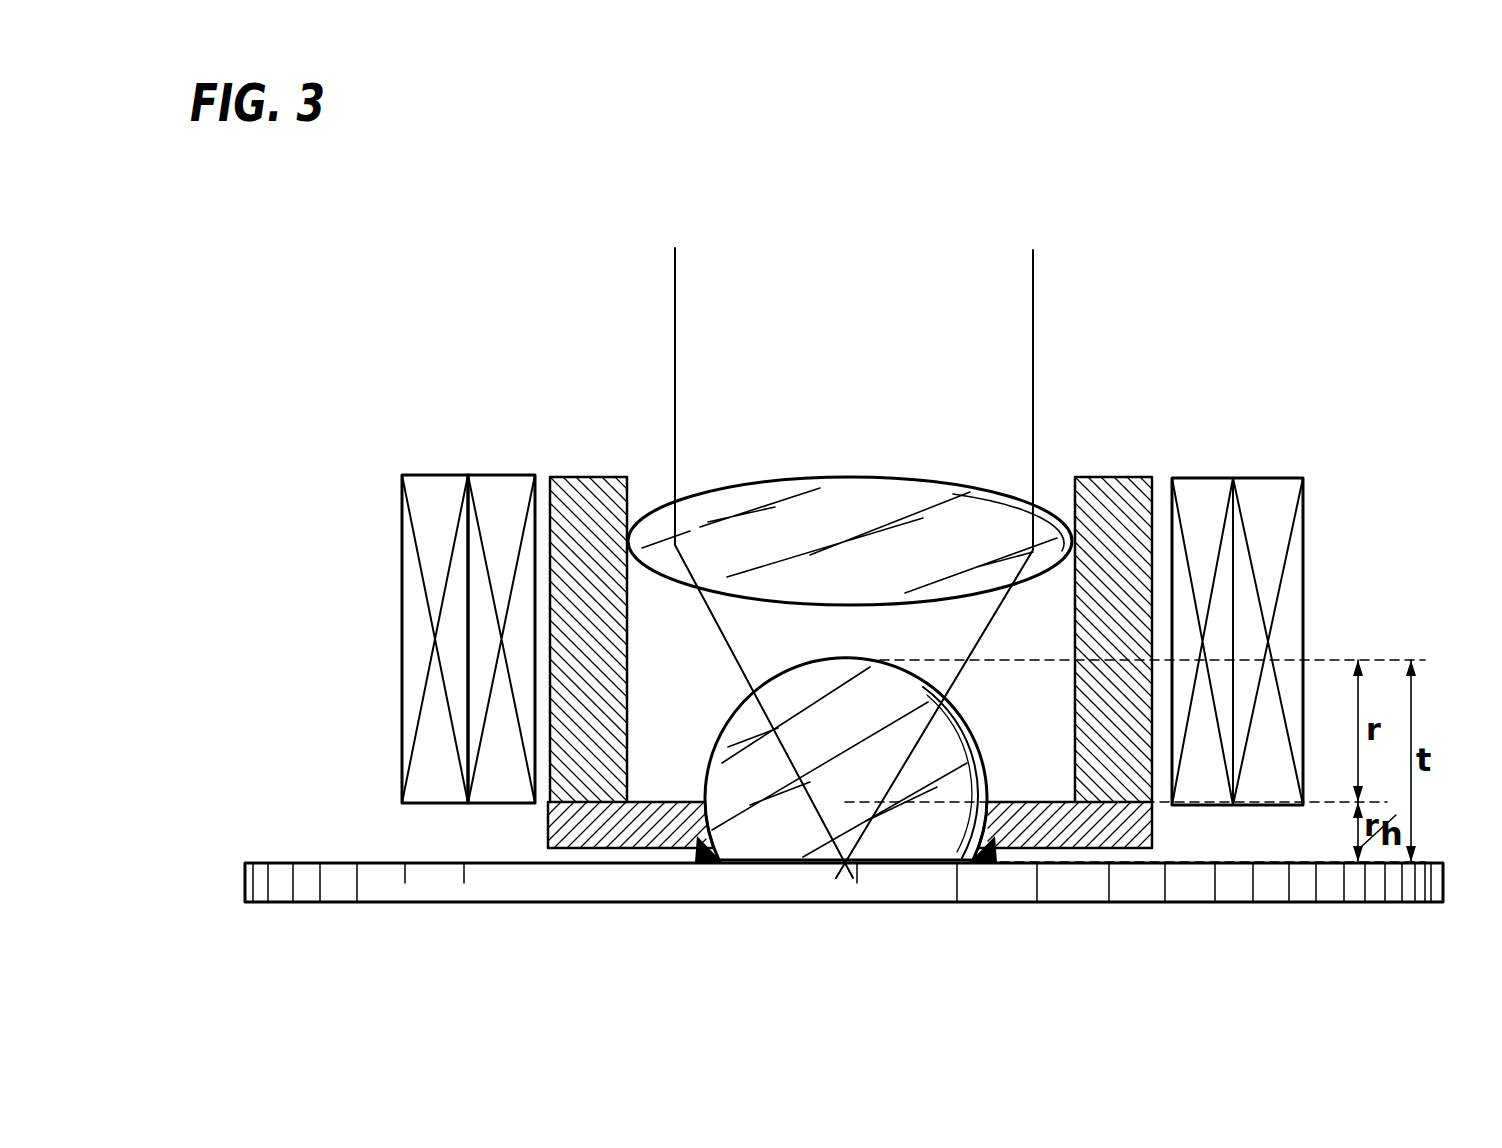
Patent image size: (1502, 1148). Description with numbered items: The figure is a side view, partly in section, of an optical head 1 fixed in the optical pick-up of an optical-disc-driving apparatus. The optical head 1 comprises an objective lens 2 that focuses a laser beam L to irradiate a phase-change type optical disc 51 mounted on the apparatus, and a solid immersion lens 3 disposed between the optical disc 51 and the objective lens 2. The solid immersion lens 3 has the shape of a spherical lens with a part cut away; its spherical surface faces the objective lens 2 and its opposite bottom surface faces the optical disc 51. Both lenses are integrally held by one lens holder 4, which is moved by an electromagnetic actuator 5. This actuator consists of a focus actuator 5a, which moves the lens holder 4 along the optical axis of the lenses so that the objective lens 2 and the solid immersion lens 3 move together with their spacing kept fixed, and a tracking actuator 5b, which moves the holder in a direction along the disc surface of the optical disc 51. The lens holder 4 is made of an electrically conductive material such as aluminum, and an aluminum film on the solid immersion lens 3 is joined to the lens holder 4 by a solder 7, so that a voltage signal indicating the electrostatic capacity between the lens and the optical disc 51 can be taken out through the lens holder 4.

The optical head 1 is at (652, 263).
The objective lens 2 is at (799, 479).
The solid immersion lens 3 is at (770, 682).
The lens holder 4 is at (1092, 476).
The electromagnetic actuator 5 is at (1172, 476).
The focus actuator 5a is at (498, 475).
The tracking actuator 5b is at (415, 475).
The solder 7 is at (984, 858).
The phase-change type optical disc 51 is at (367, 903).
The laser beam L is at (1034, 288).